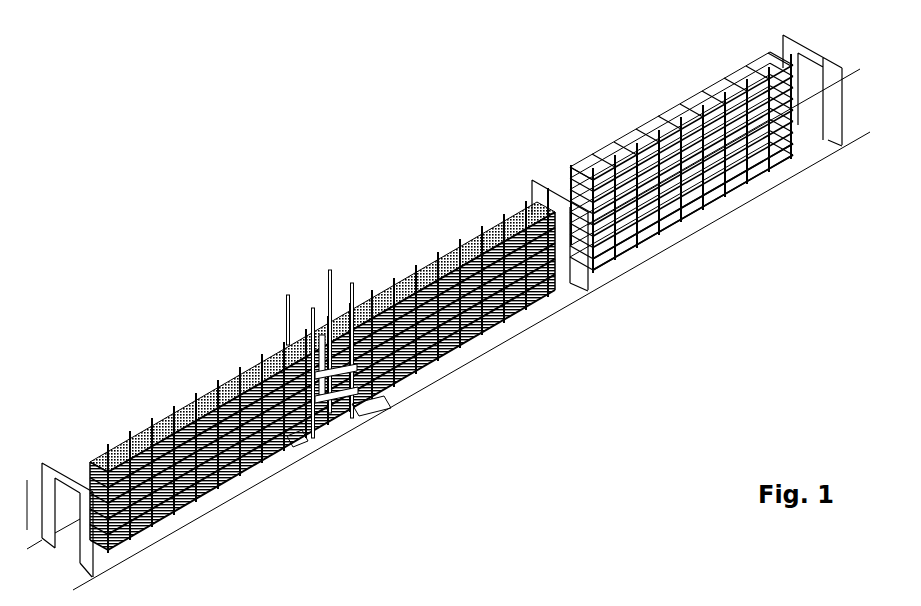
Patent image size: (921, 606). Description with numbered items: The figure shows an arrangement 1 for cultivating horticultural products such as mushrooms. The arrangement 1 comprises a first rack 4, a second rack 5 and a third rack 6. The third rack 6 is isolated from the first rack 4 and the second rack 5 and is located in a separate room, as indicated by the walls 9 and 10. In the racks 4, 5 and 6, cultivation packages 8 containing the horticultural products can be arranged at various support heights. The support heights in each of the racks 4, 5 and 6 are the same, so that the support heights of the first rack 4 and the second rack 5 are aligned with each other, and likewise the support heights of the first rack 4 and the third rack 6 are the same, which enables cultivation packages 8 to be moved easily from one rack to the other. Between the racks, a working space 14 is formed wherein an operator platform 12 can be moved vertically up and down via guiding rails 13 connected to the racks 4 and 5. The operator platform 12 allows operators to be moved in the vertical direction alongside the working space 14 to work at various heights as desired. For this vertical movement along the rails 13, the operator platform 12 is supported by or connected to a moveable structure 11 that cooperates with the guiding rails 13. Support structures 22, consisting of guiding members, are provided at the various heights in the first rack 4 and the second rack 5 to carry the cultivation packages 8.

The arrangement 1 is at (377, 162).
The first rack 4 is at (453, 258).
The second rack 5 is at (218, 383).
The third rack 6 is at (692, 118).
The cultivation packages 8 is at (172, 417).
The wall 9 is at (588, 281).
The wall 10 is at (840, 120).
The moveable structure 11 is at (341, 402).
The operator platform 12 is at (333, 402).
The guiding rails 13 is at (287, 298).
The working space 14 is at (322, 416).
The support structures 22 is at (716, 188).